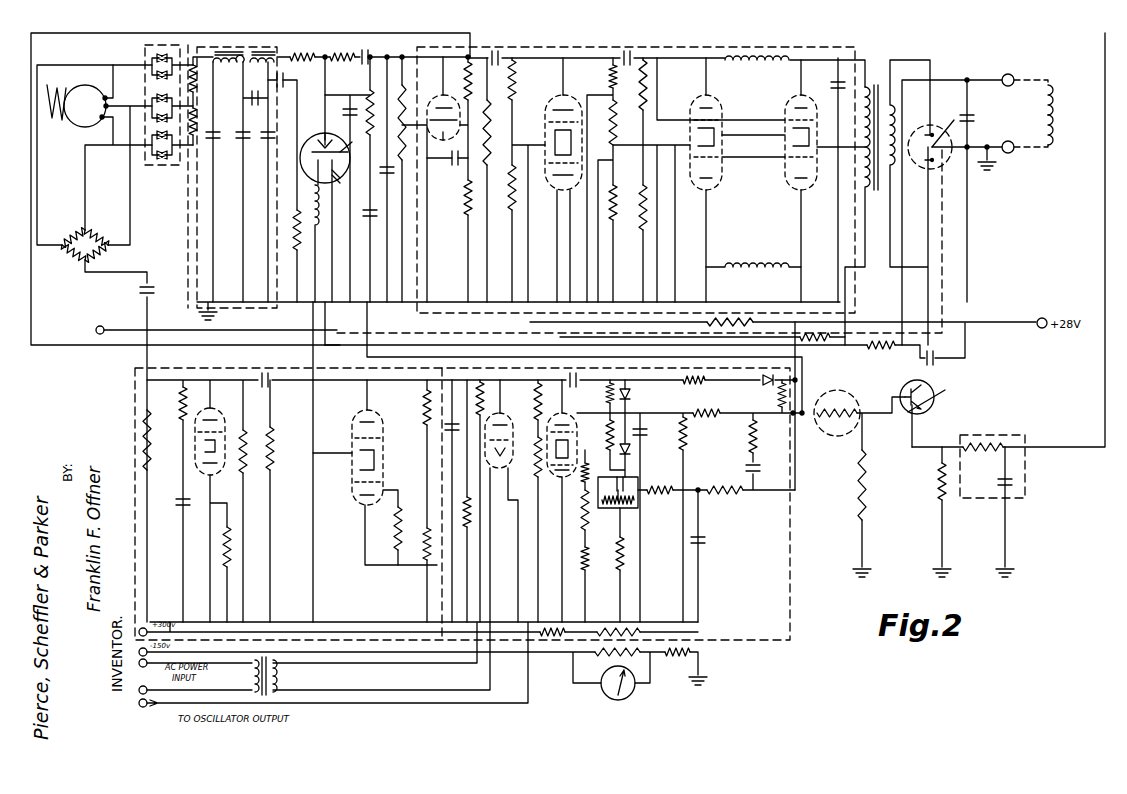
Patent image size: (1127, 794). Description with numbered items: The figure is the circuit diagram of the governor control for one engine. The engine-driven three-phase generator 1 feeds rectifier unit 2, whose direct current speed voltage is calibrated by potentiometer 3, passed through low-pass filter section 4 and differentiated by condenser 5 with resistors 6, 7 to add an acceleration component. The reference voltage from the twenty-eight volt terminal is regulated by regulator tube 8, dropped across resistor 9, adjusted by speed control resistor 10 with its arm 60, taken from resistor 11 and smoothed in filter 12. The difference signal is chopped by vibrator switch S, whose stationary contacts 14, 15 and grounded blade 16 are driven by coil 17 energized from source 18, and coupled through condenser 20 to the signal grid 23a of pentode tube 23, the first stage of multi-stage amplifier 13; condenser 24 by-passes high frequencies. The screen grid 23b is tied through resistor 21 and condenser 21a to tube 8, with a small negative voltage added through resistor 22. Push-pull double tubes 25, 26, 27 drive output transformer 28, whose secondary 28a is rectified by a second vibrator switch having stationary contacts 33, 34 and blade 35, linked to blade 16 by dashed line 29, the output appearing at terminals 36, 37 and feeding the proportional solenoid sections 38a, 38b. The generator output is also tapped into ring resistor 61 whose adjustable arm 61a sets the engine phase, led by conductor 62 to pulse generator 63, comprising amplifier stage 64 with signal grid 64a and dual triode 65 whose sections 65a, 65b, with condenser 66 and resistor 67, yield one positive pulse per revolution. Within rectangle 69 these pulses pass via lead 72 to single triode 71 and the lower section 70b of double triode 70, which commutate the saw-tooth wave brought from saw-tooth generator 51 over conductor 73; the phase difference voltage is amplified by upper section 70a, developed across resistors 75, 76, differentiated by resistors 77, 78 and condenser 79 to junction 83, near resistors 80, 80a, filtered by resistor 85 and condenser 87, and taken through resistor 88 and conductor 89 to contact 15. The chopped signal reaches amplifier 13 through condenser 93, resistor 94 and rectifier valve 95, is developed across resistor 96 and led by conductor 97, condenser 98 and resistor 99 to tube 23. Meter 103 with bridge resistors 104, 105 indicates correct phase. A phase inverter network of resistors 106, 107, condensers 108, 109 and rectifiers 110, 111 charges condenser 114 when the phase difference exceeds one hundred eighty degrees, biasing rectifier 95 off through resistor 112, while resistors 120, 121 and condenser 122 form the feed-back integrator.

The generator 1 is at (97, 93).
The rectifier unit 2 is at (145, 50).
The potentiometer 3 is at (195, 90).
The low-pass filter section 4 is at (252, 47).
The condenser 5 is at (282, 86).
The resistor 6 is at (298, 52).
The resistor 7 is at (294, 215).
The regulator tube 8 is at (320, 142).
The resistor 9 is at (858, 490).
The speed control resistor 10 is at (908, 390).
The resistor 11 is at (938, 477).
The filter 12 is at (1020, 436).
The multi-stage amplifier 13 is at (312, 158).
The stationary contact 14 is at (328, 145).
The stationary contact 15 is at (334, 176).
The vibrating blade contact 16 is at (345, 154).
The coil 17 is at (312, 200).
The source 18 is at (99, 328).
The condenser 20 is at (366, 57).
The resistor 21 is at (464, 197).
The condenser 21a is at (452, 163).
The resistor 22 is at (466, 80).
The pentode tube 23 is at (438, 100).
The signal grid 23a is at (448, 135).
The screen grid 23b is at (458, 95).
The condenser 24 is at (385, 170).
The double tube 25 is at (560, 99).
The double tube 26 is at (699, 101).
The double tube 27 is at (795, 101).
The output transformer 28 is at (886, 79).
The secondary 28a is at (893, 176).
The dashed line 29 is at (594, 333).
The stationary contact 33 is at (923, 137).
The stationary contact 34 is at (923, 160).
The contact blade 35 is at (943, 128).
The terminal X 36 is at (1038, 82).
The terminal Y 37 is at (1023, 153).
The coil section 38a is at (1051, 100).
The coil section 38b is at (1051, 130).
The saw-tooth generator 51 is at (924, 132).
The transistor lead 60 is at (940, 395).
The ring resistor 61 is at (66, 235).
The adjustable contact arm 61a is at (96, 235).
The conductor 62 is at (146, 320).
The pulse generator 63 is at (266, 372).
The amplifier stage 64 is at (208, 420).
The signal grid 64a is at (215, 463).
The dual triode 65 is at (380, 452).
The upper tube section 65a is at (360, 420).
The lower tube section 65b is at (360, 498).
The condenser 66 is at (424, 412).
The resistor 67 is at (395, 530).
The rectangle 69 is at (790, 552).
The double triode 70 is at (562, 414).
The upper triode section 70a is at (572, 422).
The lower tube section 70b is at (562, 478).
The single triode 71 is at (500, 416).
The lead 72 is at (466, 472).
The conductor 73 is at (392, 698).
The resistor 75 is at (584, 512).
The resistor 76 is at (588, 555).
The resistor 77 is at (610, 506).
The resistor 78 is at (627, 506).
The condenser 79 is at (629, 478).
The resistor 80 is at (617, 566).
The resistor 80a is at (620, 628).
The junction 83 is at (626, 498).
The resistor 85 is at (660, 496).
The condenser 87 is at (705, 542).
The resistor 88 is at (726, 488).
The conductor 89 is at (534, 347).
The condenser 93 is at (758, 469).
The resistor 94 is at (750, 440).
The rectifier valve 95 is at (766, 384).
The resistor 96 is at (786, 392).
The conductor 97 is at (446, 355).
The condenser 98 is at (367, 214).
The resistor 99 is at (368, 97).
The meter 103 is at (632, 694).
The bridge arm resistor 104 is at (680, 658).
The bridge arm resistor 105 is at (606, 658).
The resistor 106 is at (607, 393).
The resistor 107 is at (607, 434).
The condenser 108 is at (586, 376).
The condenser 109 is at (588, 470).
The unidirectional conducting device 110 is at (626, 386).
The unidirectional conducting device 111 is at (625, 455).
The resistor 112 is at (700, 383).
The condenser 114 is at (645, 434).
The resistor 120 is at (834, 337).
The resistor 121 is at (894, 346).
The condenser 122 is at (935, 360).